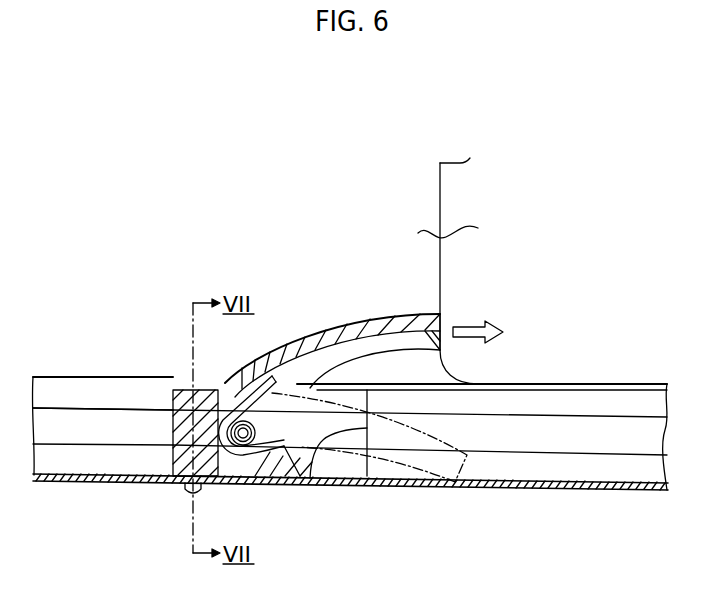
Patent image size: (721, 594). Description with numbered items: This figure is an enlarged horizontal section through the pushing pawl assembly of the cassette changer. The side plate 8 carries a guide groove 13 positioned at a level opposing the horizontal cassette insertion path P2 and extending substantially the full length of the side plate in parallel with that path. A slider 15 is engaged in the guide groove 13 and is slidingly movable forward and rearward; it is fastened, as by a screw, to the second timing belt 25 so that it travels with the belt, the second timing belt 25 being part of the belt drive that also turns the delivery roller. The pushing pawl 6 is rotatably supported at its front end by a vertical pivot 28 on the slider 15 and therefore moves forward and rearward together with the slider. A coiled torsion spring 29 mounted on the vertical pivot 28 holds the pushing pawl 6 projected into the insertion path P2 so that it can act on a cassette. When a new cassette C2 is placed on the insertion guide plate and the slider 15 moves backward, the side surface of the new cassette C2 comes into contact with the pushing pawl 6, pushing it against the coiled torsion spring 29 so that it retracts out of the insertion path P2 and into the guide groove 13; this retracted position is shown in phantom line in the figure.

The pushing pawl 6 is at (337, 324).
The side plate 8 is at (78, 377).
The guide groove 13 is at (135, 395).
The slider 15 is at (302, 470).
The second timing belt 25 is at (540, 491).
The vertical pivot 28 is at (248, 447).
The coiled torsion spring 29 is at (262, 392).
The new cassette C2 is at (440, 188).
The cassette insertion path P2 is at (465, 230).